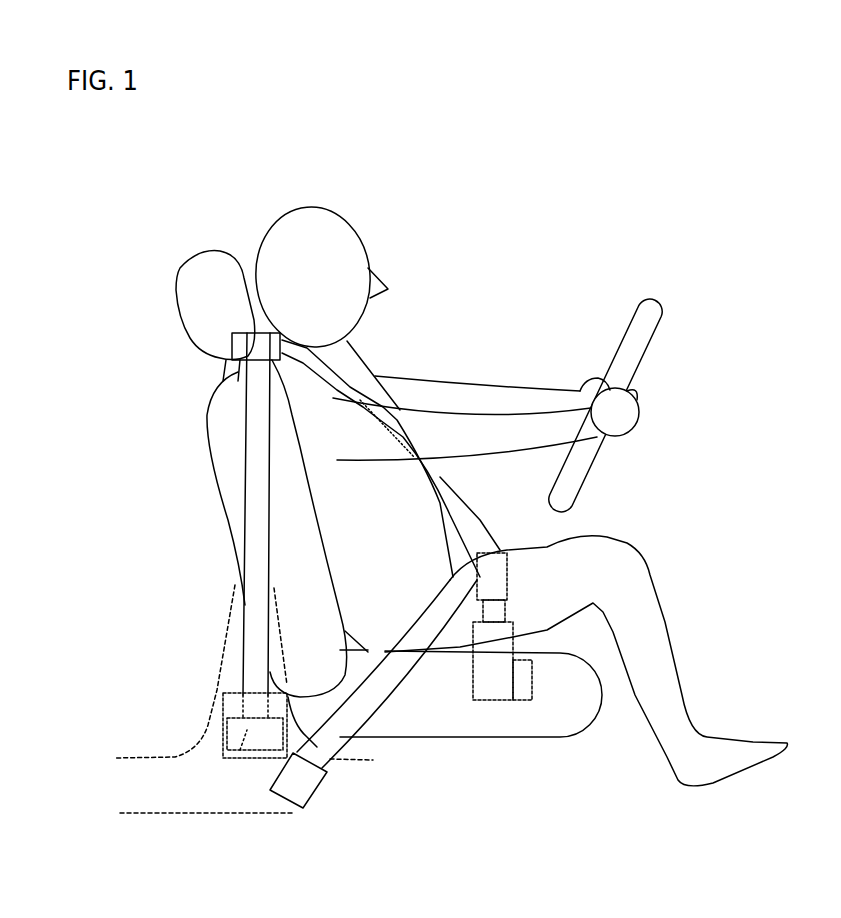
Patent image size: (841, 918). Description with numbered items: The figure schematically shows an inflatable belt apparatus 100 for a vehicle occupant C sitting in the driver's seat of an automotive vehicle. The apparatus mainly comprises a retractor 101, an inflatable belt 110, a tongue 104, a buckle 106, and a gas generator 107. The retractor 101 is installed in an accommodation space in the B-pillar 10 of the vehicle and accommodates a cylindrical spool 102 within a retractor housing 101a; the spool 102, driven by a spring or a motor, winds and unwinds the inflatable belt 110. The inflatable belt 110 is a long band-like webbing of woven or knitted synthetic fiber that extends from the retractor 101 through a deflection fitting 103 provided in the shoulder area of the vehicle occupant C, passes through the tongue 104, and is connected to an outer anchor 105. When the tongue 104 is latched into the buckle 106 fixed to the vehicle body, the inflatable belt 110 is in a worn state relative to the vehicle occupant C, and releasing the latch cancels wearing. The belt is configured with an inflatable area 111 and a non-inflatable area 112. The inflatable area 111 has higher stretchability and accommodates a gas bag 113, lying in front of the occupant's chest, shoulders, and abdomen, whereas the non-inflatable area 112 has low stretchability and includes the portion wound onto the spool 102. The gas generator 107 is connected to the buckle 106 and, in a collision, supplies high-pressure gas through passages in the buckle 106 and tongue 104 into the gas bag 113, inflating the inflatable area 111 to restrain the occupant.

The vehicle occupant C is at (396, 370).
The inflatable belt apparatus 100 is at (106, 413).
The B-pillar 10 is at (212, 665).
The retractor 101 is at (251, 770).
The retractor housing 101a is at (227, 742).
The spool 102 is at (247, 730).
The deflection fitting 103 is at (238, 334).
The tongue 104 is at (508, 604).
The outer anchor 105 is at (298, 778).
The buckle 106 is at (484, 702).
The gas generator 107 is at (533, 700).
The inflatable belt 110 is at (236, 591).
The inflatable area 111 is at (440, 477).
The non-inflatable area 112 is at (260, 470).
The gas bag 113 is at (470, 513).